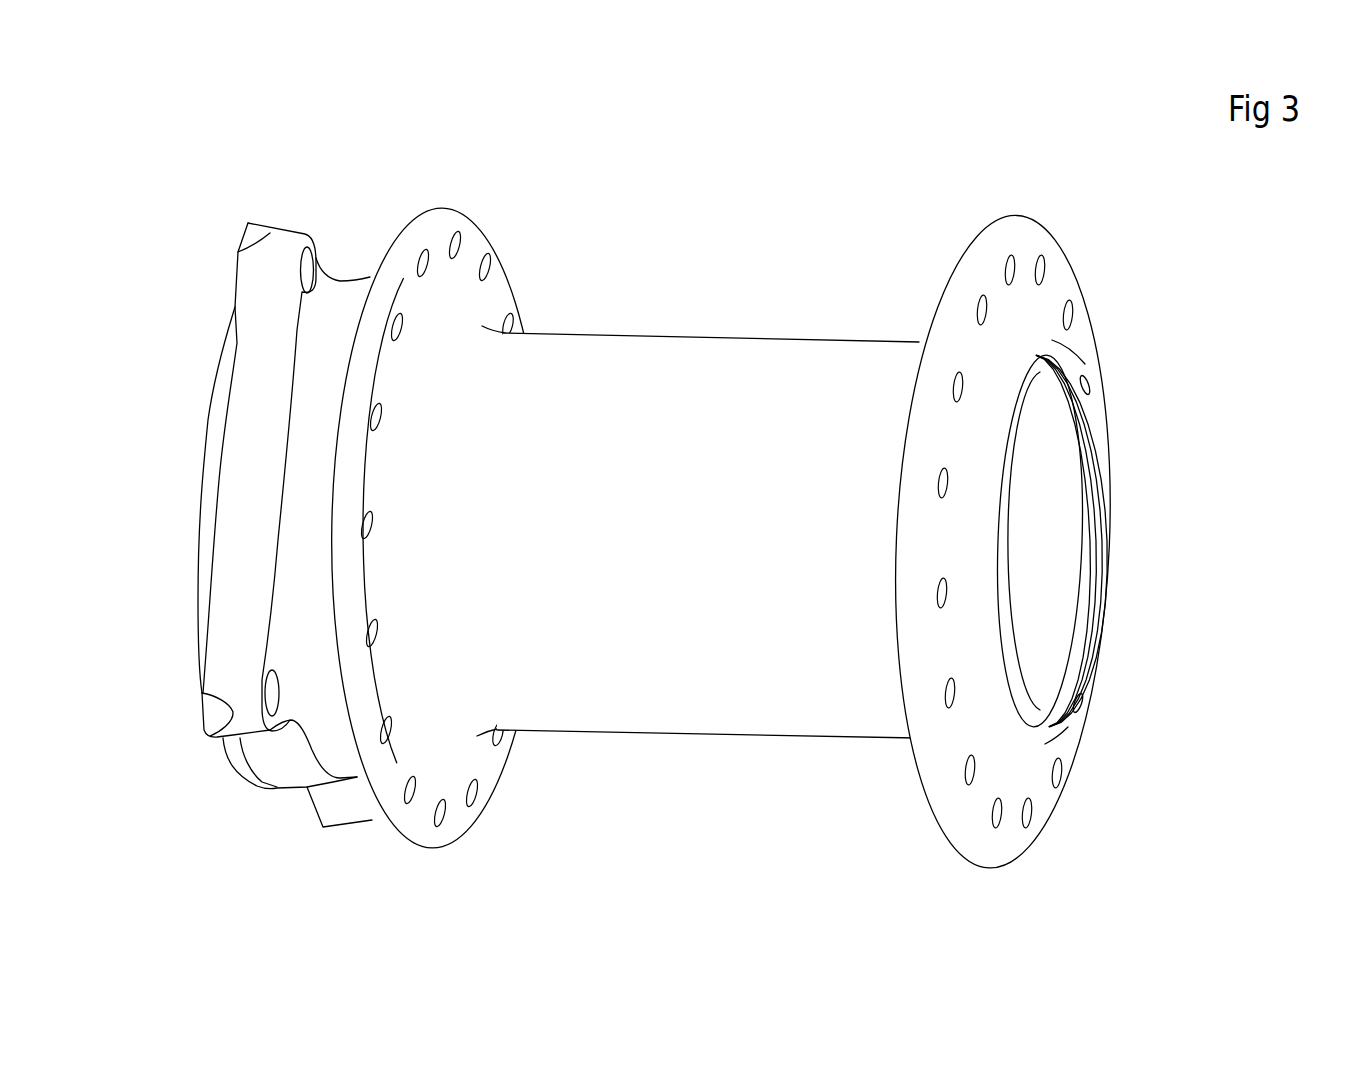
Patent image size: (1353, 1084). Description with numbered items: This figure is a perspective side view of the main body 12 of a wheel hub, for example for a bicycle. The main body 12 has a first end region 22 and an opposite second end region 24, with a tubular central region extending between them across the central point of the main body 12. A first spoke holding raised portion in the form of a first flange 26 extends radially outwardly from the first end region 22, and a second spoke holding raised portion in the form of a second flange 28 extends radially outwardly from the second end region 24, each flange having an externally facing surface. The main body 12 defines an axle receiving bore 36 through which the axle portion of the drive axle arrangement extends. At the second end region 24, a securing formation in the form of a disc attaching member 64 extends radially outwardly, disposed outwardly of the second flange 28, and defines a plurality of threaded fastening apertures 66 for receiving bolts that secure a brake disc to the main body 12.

The main body 12 is at (659, 337).
The first end region 22 is at (1028, 352).
The second end region 24 is at (317, 637).
The first flange 26 is at (1055, 810).
The second flange 28 is at (378, 333).
The axle receiving bore 36 is at (1035, 482).
The disc attaching member 64 is at (235, 665).
The threaded fastening apertures 66 is at (306, 270).